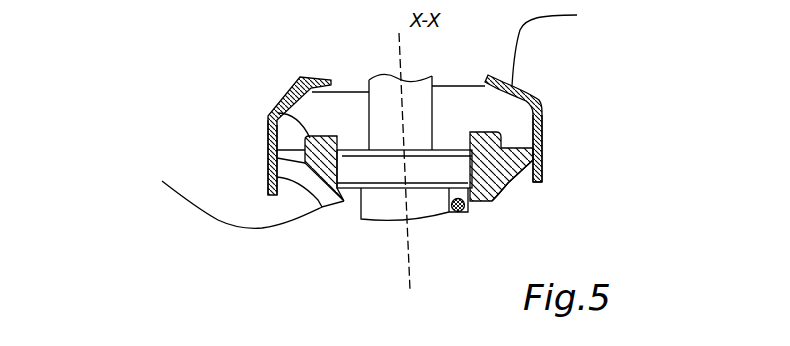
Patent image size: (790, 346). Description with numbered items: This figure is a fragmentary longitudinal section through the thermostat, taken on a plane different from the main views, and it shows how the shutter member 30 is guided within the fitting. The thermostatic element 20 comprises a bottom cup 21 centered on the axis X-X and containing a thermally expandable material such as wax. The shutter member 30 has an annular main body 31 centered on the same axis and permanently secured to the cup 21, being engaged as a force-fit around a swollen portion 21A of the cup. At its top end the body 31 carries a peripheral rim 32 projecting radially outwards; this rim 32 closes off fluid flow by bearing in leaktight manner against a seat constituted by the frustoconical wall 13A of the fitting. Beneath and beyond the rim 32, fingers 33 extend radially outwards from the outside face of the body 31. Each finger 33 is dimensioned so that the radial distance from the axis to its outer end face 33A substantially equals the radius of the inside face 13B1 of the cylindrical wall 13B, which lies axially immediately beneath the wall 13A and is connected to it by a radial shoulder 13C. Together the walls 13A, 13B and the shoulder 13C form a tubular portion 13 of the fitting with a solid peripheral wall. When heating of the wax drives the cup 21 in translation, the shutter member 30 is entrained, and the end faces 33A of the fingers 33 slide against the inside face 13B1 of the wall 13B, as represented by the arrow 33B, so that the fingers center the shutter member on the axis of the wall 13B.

The tubular portion of the fitting 13 is at (465, 120).
The frustoconical wall 13A is at (464, 77).
The radial shoulder 13C is at (516, 92).
The cylindrical wall 13B is at (543, 128).
The inside face of the wall 13B1 is at (530, 183).
The shutter member 30 is at (316, 167).
The peripheral rim 32 is at (262, 107).
The finger 33 is at (266, 146).
The annular main body 31 is at (231, 193).
The outer end face of the finger 33A is at (522, 150).
The arrow 33B is at (252, 152).
The thermostatic element 20 is at (404, 217).
The bottom cup 21 is at (388, 219).
The swollen portion of the cup 21A is at (404, 169).